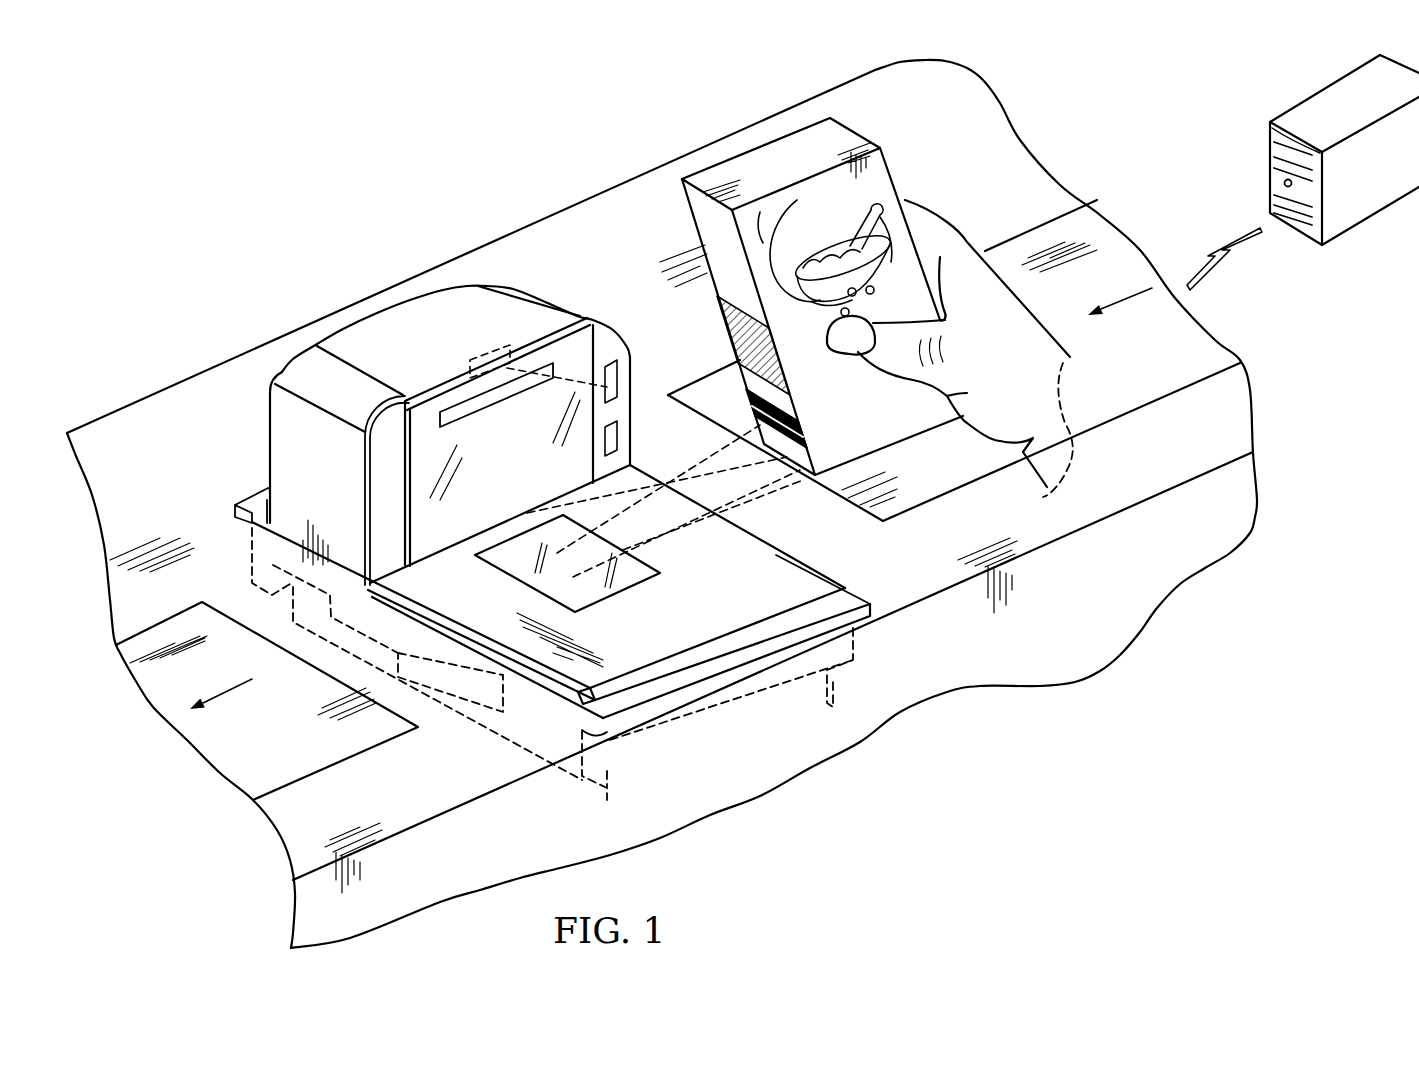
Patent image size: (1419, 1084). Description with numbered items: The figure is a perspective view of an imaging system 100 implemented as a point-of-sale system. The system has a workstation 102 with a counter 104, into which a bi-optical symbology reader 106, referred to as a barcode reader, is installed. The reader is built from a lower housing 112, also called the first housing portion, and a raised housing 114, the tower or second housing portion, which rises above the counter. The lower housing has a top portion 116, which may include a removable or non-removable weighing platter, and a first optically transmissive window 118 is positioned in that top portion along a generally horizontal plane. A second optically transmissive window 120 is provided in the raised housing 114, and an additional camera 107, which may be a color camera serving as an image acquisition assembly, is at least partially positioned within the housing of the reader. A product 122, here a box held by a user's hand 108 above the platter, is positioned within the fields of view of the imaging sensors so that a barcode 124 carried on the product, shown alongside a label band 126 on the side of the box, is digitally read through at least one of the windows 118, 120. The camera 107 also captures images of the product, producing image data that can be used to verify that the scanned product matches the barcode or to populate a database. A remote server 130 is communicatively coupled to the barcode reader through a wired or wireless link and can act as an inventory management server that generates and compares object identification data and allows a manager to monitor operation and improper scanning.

The imaging system 100 is at (163, 328).
The workstation 102 is at (548, 200).
The counter 104 is at (975, 133).
The bi-optical symbology reader 106 is at (278, 466).
The camera 107 is at (478, 348).
The hand of user 108 is at (1037, 340).
The lower housing 112 is at (563, 797).
The raised housing 114 is at (365, 303).
The top portion 116 is at (560, 672).
The first optically transmissive window 118 is at (613, 583).
The second optically transmissive window 120 is at (432, 392).
The product 122 is at (900, 233).
The barcode 124 is at (803, 432).
The product label band 126 is at (728, 327).
The remote server 130 is at (1268, 168).